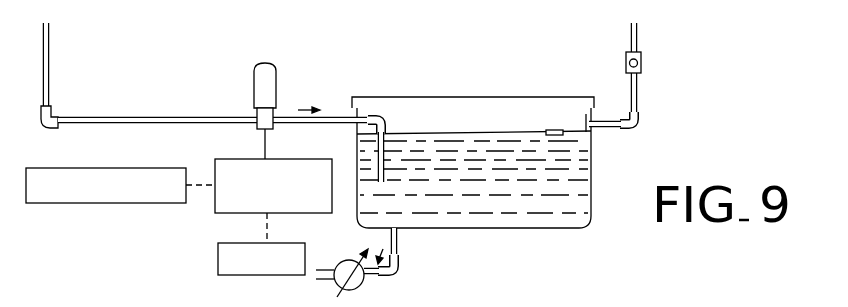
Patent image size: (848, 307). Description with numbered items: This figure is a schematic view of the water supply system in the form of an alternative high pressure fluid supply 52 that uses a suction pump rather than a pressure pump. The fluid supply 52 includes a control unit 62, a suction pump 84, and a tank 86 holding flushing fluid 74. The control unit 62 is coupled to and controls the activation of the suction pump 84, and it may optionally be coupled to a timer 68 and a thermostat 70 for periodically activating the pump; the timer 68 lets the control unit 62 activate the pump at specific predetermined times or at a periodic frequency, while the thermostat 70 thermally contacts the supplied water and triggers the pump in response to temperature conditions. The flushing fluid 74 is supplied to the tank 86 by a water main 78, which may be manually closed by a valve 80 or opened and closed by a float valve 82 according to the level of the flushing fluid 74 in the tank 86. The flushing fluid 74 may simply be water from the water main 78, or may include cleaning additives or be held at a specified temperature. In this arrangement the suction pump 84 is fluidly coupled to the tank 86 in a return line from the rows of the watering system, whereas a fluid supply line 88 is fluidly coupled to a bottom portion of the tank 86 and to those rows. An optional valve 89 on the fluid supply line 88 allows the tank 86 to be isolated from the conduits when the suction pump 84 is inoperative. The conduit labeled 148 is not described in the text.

The high pressure fluid supply 52 is at (381, 78).
The control unit 62 is at (230, 213).
The timer 68 is at (260, 275).
The thermostat 70 is at (88, 203).
The flushing fluid 74 is at (499, 177).
The water main 78 is at (643, 95).
The valve 80 is at (641, 62).
The float valve 82 is at (549, 129).
The suction pump 84 is at (254, 80).
The tank 86 is at (594, 170).
The fluid supply line 88 is at (408, 260).
The valve 89 is at (351, 291).
The conduit 148 is at (488, 292).